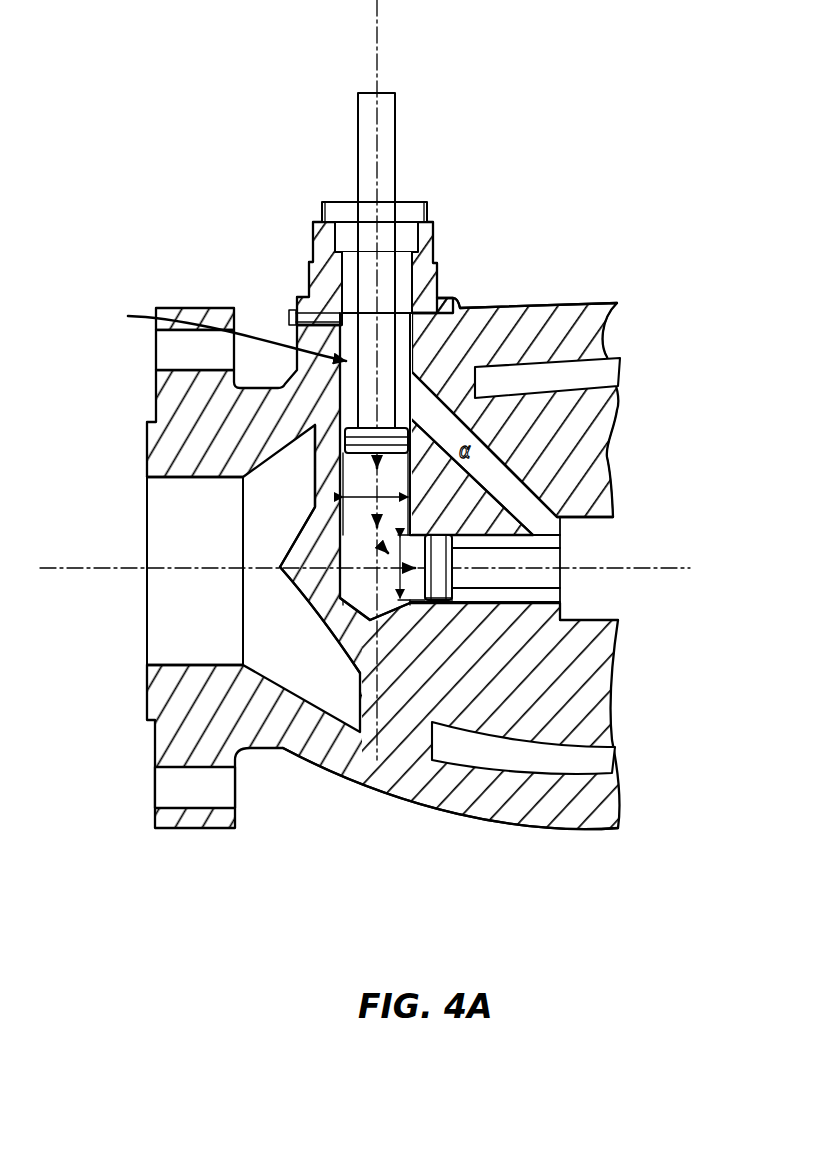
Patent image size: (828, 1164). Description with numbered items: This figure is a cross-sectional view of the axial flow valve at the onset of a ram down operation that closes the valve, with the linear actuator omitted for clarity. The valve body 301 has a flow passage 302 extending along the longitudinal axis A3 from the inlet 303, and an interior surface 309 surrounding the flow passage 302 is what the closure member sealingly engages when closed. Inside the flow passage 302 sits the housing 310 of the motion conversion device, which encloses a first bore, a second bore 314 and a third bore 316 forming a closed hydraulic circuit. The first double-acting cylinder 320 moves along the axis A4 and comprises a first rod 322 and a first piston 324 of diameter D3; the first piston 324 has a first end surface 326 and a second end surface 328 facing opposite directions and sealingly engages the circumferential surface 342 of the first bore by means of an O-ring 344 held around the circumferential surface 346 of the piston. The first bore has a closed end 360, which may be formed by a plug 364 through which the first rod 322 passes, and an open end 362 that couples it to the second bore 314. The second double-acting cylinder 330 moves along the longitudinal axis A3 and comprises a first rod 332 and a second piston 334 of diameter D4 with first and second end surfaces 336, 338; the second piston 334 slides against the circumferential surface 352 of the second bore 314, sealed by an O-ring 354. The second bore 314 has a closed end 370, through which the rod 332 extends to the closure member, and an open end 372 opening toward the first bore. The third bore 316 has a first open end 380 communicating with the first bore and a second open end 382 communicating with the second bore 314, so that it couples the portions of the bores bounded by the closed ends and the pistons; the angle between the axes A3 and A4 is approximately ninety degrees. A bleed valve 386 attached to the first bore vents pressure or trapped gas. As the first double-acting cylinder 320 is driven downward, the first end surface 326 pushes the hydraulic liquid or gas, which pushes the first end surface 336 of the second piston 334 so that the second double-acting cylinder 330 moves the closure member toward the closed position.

The valve body 301 is at (570, 315).
The flow passage 302 is at (537, 368).
The inlet 303 is at (165, 612).
The interior surface 309 is at (590, 365).
The housing 310 is at (610, 400).
The second bore 314 is at (500, 607).
The third bore 316 is at (507, 480).
The first double-acting cylinder 320 is at (252, 436).
The first rod 322 is at (398, 133).
The first piston 324 is at (340, 430).
The first end surface 326 is at (322, 490).
The second end surface 328 is at (340, 415).
The second double-acting cylinder 330 is at (537, 597).
The first rod 332 is at (512, 605).
The second piston 334 is at (430, 607).
The first end surface 336 is at (407, 607).
The second end surface 338 is at (485, 607).
The circumferential surface 342 is at (340, 351).
The O-ring 344 is at (340, 440).
The circumferential surface 346 is at (345, 449).
The circumferential surface 352 is at (517, 607).
The O-ring 354 is at (455, 607).
The closed end 360 is at (437, 297).
The open end 362 is at (310, 544).
The plug 364 is at (393, 267).
The closed end 370 is at (587, 500).
The open end 372 is at (590, 598).
The first open end 380 is at (455, 307).
The second open end 382 is at (560, 497).
The bleed valve 386 is at (288, 313).
The longitudinal axis A3 is at (367, 599).
The axis A4 is at (383, 47).
The diameter D3 is at (340, 520).
The diameter D4 is at (392, 600).